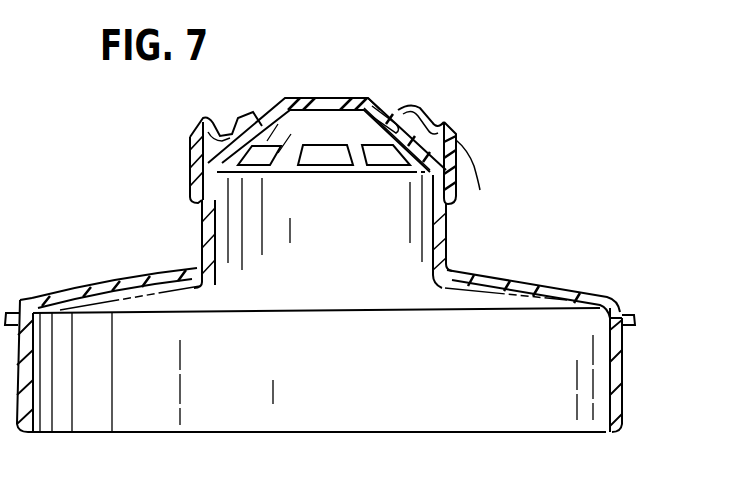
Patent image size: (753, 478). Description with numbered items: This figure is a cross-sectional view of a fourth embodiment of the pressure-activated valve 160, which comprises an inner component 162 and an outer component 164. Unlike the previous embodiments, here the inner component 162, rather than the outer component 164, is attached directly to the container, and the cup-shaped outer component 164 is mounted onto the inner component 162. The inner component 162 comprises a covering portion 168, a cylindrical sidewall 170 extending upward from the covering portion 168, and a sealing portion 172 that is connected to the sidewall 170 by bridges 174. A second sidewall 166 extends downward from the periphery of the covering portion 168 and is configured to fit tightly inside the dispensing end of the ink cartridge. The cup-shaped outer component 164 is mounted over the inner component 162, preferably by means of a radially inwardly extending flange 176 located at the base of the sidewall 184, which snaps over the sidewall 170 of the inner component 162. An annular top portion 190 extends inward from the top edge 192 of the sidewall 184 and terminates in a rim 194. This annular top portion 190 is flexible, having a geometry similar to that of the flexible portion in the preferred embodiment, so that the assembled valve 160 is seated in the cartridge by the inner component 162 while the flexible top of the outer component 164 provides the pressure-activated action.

The valve 160 is at (558, 194).
The inner component 162 is at (567, 287).
The outer component 164 is at (457, 153).
The second sidewall 166 is at (622, 372).
The covering portion 168 is at (78, 293).
The cylindrical sidewall 170 is at (447, 232).
The sealing portion 172 is at (352, 99).
The bridges 174 is at (310, 118).
The radially inwardly extending flange 176 is at (218, 214).
The sidewall 184 is at (460, 180).
The annular top portion 190 is at (413, 110).
The top edge 192 is at (445, 118).
The rim 194 is at (370, 120).